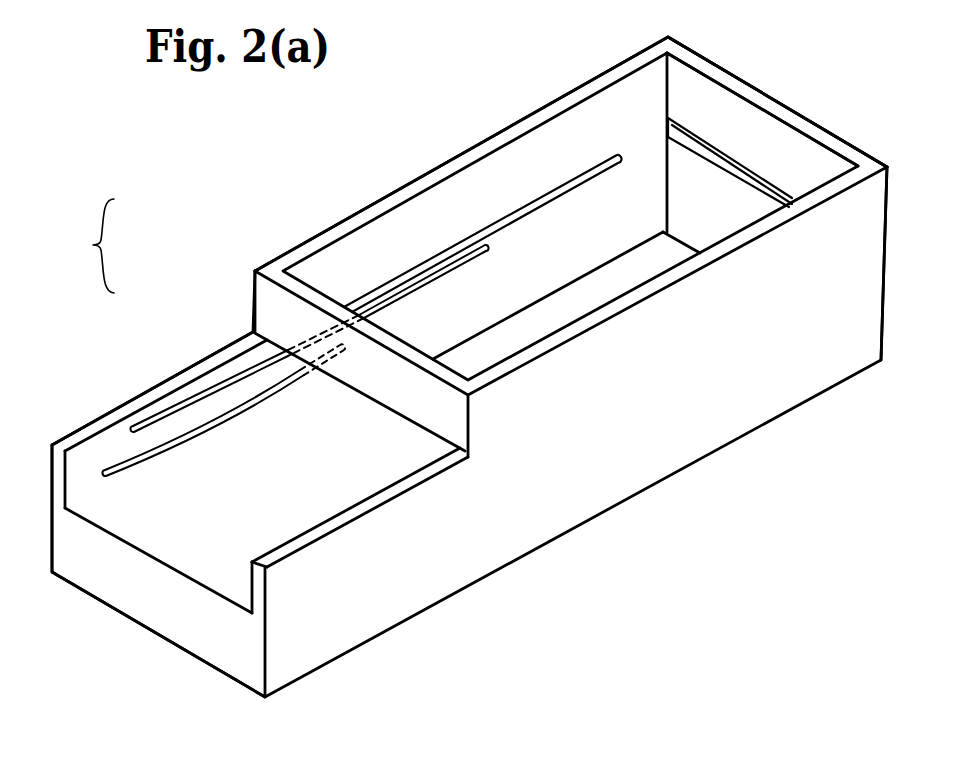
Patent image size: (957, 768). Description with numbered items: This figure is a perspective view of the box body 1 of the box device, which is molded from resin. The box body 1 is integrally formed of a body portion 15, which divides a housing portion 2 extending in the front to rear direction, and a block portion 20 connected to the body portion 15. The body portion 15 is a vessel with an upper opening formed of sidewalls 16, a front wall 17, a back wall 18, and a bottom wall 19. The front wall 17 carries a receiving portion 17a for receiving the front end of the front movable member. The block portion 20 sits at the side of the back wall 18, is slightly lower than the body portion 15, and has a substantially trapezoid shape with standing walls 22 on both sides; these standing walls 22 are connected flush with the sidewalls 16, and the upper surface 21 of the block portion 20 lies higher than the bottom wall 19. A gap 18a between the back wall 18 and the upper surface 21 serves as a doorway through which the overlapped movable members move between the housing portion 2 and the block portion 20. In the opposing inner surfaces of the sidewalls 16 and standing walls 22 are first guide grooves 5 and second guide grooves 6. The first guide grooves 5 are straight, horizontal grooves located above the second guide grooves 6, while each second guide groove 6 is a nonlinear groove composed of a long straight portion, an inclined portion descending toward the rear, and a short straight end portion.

The box body 1 is at (78, 262).
The housing portion 2 is at (611, 116).
The first guide grooves 5 is at (467, 240).
The second guide grooves 6 is at (388, 302).
The body portion 15 is at (268, 259).
The sidewalls 16 is at (519, 125).
The front wall 17 is at (809, 127).
The receiving portion 17a is at (702, 143).
The back wall 18 is at (303, 290).
The gap 18a is at (397, 426).
The bottom wall 19 is at (597, 290).
The block portion 20 is at (226, 333).
The upper surface 21 is at (160, 536).
The standing walls 22 is at (82, 436).